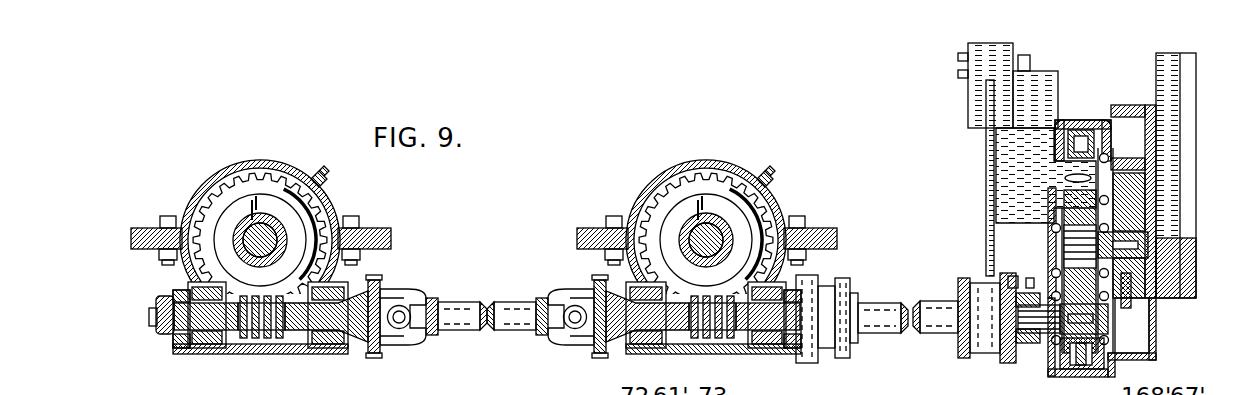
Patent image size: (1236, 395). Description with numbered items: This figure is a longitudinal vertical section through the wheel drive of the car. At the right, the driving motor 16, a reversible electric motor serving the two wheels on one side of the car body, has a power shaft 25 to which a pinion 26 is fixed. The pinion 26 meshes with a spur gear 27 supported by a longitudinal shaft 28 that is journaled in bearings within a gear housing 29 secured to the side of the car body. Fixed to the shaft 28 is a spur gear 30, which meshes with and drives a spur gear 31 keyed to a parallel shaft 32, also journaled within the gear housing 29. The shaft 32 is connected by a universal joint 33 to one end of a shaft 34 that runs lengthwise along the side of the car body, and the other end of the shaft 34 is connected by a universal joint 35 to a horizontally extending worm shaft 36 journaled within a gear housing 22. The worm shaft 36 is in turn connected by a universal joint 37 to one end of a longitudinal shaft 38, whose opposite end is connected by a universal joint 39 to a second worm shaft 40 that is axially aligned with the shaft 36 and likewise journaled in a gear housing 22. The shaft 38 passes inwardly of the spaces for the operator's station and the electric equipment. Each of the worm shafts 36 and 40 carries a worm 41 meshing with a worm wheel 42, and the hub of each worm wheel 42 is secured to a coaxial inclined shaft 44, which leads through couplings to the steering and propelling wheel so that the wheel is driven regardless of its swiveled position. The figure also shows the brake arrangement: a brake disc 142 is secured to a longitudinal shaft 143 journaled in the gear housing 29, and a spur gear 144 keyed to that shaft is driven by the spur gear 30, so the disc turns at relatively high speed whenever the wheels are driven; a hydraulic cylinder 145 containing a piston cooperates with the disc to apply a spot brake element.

The driving motor 16 is at (1180, 162).
The gear housing 22 is at (259, 338).
The power shaft 25 is at (1125, 150).
The pinion 26 is at (1137, 147).
The spur gear 27 is at (1128, 292).
The longitudinal shaft 28 is at (1128, 247).
The gear housing 29 is at (1135, 350).
The spur gear 30 is at (1068, 240).
The spur gear 31 is at (1077, 355).
The parallel shaft 32 is at (1050, 305).
The universal joint 33 is at (983, 337).
The shaft 34 is at (887, 320).
The universal joint 35 is at (818, 332).
The worm shaft 36 is at (763, 308).
The universal joint 37 is at (552, 318).
The longitudinal shaft 38 is at (468, 320).
The universal joint 39 is at (388, 315).
The worm shaft 40 is at (298, 312).
The worm 41 is at (233, 325).
The worm wheel 42 is at (253, 168).
The inclined shaft 44 is at (238, 215).
The brake disc 142 is at (978, 232).
The longitudinal shaft 143 is at (1057, 169).
The spur gear 144 is at (1072, 130).
The hydraulic cylinder 145 is at (1033, 75).